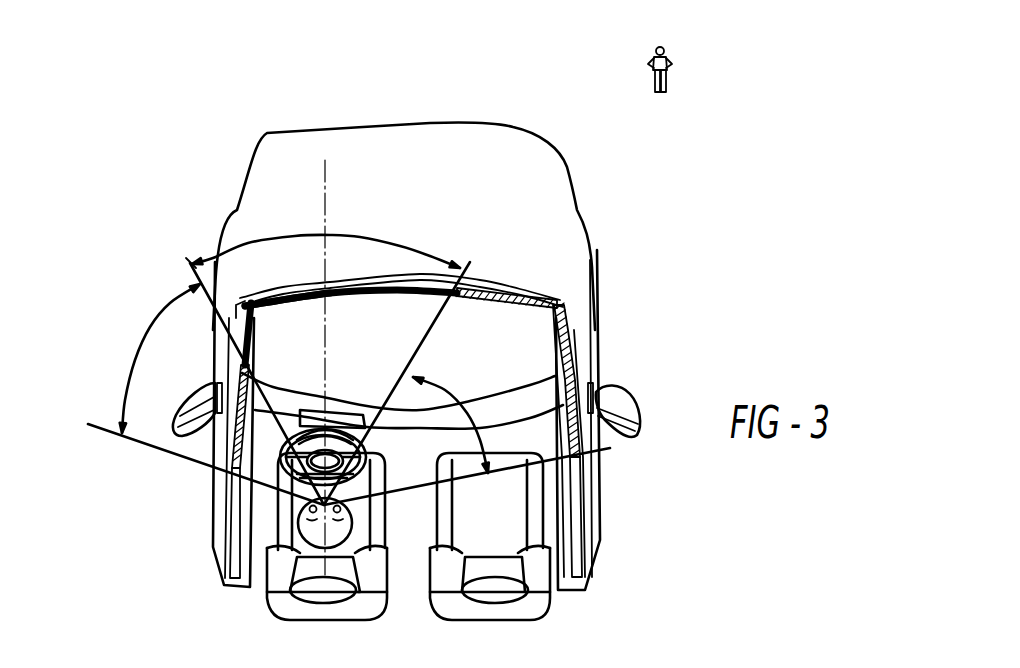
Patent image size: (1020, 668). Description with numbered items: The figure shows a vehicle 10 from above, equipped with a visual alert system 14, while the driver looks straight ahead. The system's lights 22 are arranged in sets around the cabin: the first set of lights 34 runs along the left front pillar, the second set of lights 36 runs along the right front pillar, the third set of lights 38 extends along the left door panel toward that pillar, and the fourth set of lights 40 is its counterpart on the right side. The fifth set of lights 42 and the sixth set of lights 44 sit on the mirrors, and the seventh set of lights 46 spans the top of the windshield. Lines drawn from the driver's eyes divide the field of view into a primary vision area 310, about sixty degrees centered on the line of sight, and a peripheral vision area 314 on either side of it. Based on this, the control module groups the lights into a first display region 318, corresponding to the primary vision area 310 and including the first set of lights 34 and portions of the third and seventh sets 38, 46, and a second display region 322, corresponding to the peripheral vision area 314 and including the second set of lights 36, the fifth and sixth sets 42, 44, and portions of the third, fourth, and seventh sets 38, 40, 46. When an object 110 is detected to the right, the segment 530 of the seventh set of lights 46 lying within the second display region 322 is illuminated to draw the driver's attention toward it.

The vehicle 10 is at (234, 128).
The object 110 is at (653, 83).
The visual alert system 14 is at (213, 513).
The lights 22 is at (393, 283).
The first set of lights 34 is at (258, 275).
The second set of lights 36 is at (563, 304).
The third set of lights 38 is at (247, 370).
The fourth set of lights 40 is at (548, 380).
The fifth set of lights 42 is at (174, 414).
The sixth set of lights 44 is at (627, 410).
The seventh set of lights 46 is at (358, 287).
The primary vision area 310 is at (297, 237).
The peripheral vision area 314 is at (140, 358).
The first display region 318 is at (283, 298).
The second display region 322 is at (565, 342).
The segment 530 is at (575, 335).